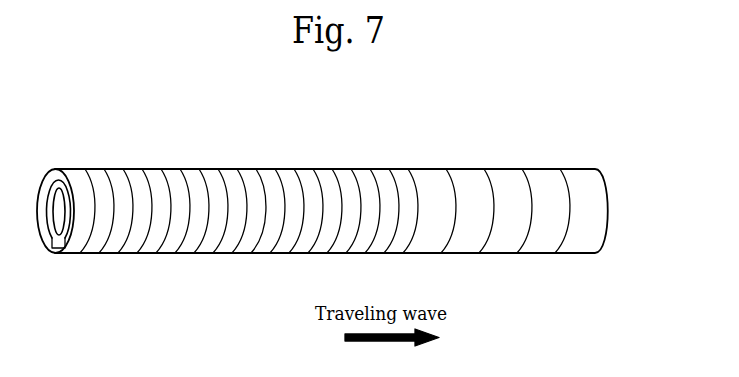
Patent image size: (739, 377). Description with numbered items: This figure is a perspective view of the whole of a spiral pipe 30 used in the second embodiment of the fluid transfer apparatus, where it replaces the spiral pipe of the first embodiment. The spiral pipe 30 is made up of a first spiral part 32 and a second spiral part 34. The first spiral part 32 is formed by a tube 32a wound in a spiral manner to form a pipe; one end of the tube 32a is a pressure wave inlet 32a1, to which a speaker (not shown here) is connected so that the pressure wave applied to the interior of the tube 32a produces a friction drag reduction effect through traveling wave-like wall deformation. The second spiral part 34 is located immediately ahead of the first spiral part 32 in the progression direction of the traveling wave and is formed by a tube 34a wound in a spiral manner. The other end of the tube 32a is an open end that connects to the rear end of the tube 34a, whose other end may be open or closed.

The spiral pipe 30 is at (343, 194).
The first spiral part 32 is at (407, 158).
The second spiral part 34 is at (593, 158).
The tube 32a is at (233, 253).
The pressure wave inlet 32a1 is at (57, 248).
The tube 34a is at (508, 242).